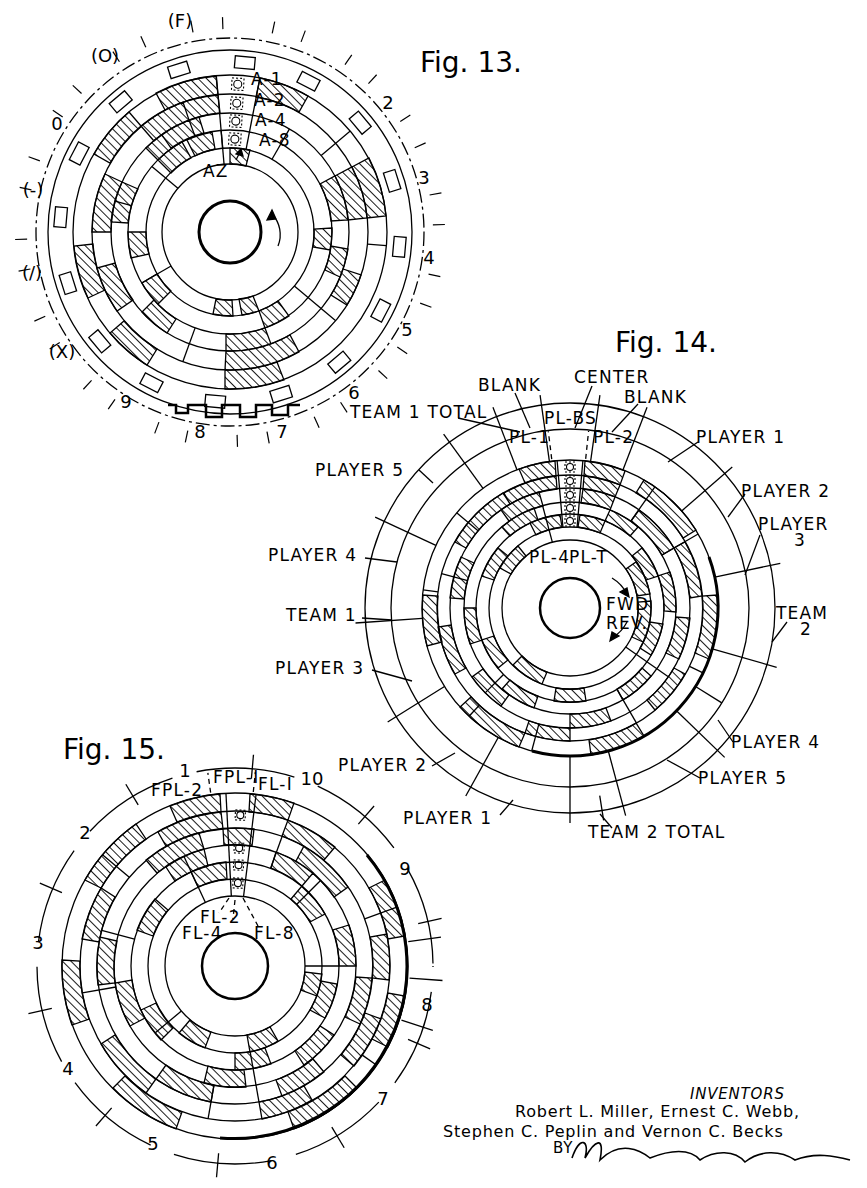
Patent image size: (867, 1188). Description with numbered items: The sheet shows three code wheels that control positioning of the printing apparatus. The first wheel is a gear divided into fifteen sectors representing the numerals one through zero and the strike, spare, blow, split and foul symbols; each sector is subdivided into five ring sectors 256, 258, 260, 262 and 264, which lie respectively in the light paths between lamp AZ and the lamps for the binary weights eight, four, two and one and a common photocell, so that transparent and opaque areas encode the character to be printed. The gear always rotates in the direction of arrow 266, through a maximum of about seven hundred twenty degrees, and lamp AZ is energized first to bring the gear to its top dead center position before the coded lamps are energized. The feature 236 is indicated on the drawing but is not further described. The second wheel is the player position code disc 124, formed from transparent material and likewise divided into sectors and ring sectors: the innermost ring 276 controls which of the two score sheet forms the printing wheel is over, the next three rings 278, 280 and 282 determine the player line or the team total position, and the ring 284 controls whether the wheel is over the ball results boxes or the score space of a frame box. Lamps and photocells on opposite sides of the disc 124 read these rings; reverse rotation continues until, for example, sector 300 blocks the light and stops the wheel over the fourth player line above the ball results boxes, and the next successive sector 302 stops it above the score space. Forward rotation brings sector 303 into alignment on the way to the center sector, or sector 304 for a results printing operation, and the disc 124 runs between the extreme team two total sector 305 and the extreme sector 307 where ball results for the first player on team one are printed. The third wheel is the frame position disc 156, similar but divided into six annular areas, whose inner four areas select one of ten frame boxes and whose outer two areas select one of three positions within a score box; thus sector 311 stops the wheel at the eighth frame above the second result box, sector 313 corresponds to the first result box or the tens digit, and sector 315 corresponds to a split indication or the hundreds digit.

In FIG. 13, the index markers 236 is at (413, 176).
In FIG. 13, the ring sector 256 is at (300, 180).
In FIG. 13, the ring sector 258 is at (150, 267).
In FIG. 13, the ring sector 260 is at (157, 310).
In FIG. 13, the ring sector 262 is at (235, 352).
In FIG. 13, the ring sector 264 is at (280, 365).
In FIG. 13, the arrow 266 is at (262, 234).
In FIG. 14, the player position code disc 124 is at (434, 677).
In FIG. 14, the innermost ring 276 is at (470, 560).
In FIG. 14, the ring 278 is at (478, 588).
In FIG. 14, the ring 280 is at (490, 613).
In FIG. 14, the ring 282 is at (501, 636).
In FIG. 14, the ring 284 is at (470, 714).
In FIG. 14, the sector 300 is at (703, 672).
In FIG. 14, the sector 302 is at (650, 690).
In FIG. 14, the sector 303 is at (622, 452).
In FIG. 14, the sector 304 is at (432, 588).
In FIG. 14, the team 2 total sector 305 is at (620, 787).
In FIG. 14, the sector 307 is at (606, 816).
In FIG. 15, the frame position disc 156 is at (404, 1018).
In FIG. 15, the sector 311 is at (424, 905).
In FIG. 15, the sector 313 is at (417, 977).
In FIG. 15, the sector 315 is at (414, 1028).